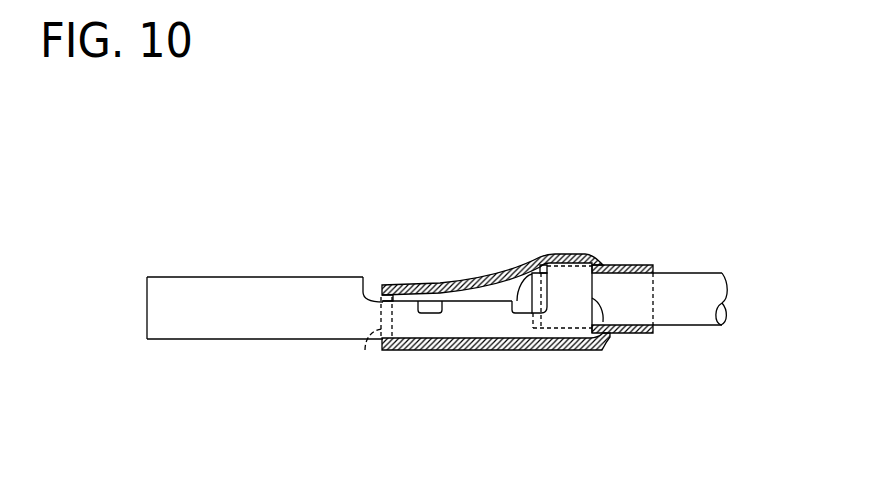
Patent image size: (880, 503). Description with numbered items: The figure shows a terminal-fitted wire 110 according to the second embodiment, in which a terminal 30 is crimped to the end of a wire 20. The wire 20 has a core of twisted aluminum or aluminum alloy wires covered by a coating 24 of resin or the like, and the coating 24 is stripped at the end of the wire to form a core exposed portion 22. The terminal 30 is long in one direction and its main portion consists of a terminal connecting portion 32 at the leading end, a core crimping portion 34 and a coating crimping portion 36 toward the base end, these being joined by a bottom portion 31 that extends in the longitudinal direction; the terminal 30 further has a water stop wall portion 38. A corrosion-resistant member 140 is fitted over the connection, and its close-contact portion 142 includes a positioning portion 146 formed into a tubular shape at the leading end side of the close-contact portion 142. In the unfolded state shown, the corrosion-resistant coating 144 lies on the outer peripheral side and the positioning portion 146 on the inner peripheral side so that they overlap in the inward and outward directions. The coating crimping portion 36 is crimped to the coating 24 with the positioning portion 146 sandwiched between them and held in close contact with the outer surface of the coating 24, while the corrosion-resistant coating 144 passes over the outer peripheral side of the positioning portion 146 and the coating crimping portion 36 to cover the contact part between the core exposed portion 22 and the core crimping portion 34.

The terminal-fitted wire 110 is at (198, 226).
The terminal 30 is at (149, 276).
The bottom portion 31 is at (237, 340).
The terminal connecting portion 32 is at (257, 277).
The water stop wall portion 38 is at (365, 350).
The core crimping portion 34 is at (468, 299).
The core exposed portion 22 is at (425, 284).
The corrosion-resistant member 140 is at (598, 240).
The corrosion-resistant coating 144 is at (512, 270).
The positioning portion 146 is at (567, 253).
The close-contact portion 142 is at (632, 263).
The coating crimping portion 36 is at (599, 340).
The wire 20 is at (713, 272).
The coating 24 is at (697, 326).